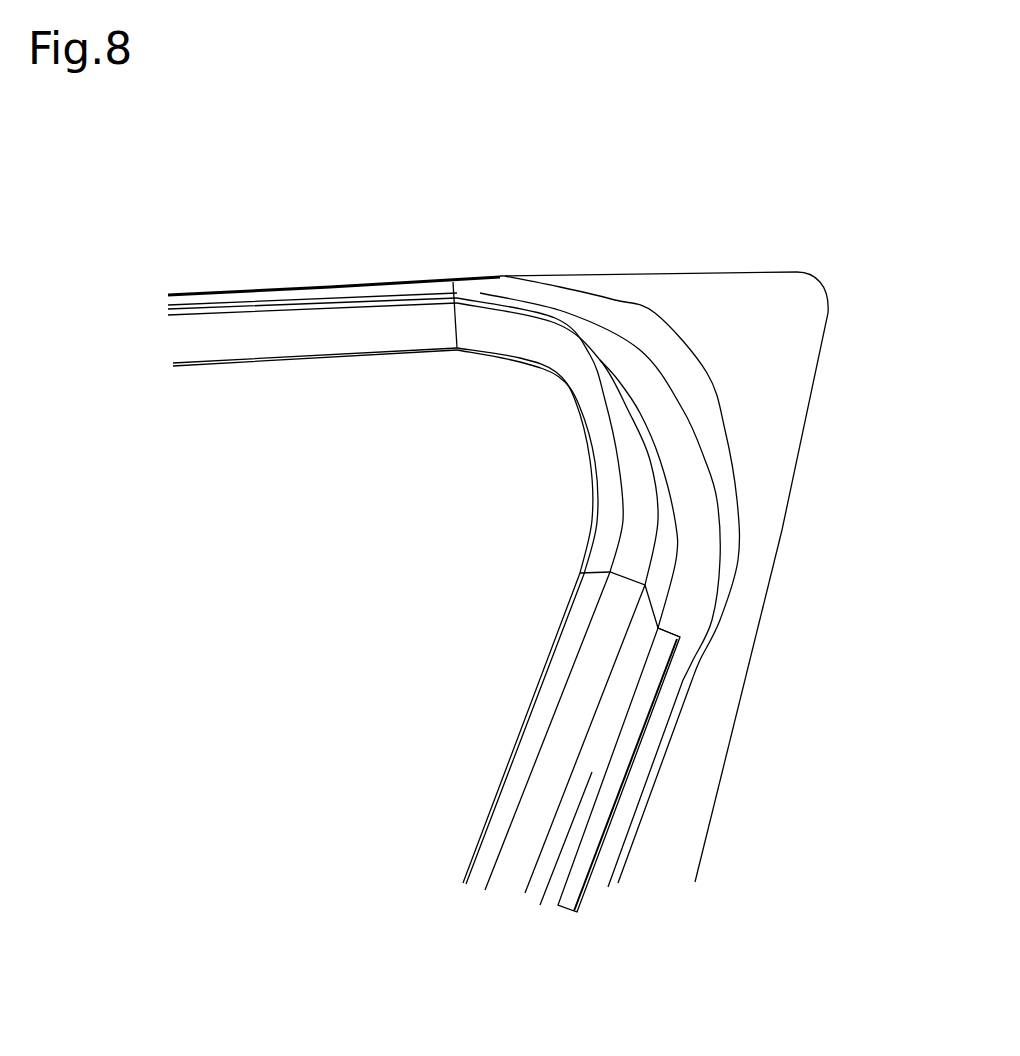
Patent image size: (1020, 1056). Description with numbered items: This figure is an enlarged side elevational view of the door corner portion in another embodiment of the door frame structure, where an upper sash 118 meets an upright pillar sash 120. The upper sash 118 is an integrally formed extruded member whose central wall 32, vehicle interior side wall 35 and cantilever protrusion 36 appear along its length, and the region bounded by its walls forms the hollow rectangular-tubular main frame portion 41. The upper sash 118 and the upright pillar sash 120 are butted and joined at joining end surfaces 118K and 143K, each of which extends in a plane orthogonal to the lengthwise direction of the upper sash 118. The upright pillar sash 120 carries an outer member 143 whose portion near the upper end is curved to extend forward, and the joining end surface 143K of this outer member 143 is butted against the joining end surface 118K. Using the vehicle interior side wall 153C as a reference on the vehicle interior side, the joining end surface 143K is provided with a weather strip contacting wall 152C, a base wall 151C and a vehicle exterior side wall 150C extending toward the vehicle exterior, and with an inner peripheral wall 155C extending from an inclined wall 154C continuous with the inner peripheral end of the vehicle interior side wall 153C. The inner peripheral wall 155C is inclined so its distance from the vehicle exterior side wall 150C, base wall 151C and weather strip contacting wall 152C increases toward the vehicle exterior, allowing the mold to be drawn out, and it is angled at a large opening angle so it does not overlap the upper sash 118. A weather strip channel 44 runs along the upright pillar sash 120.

The upper sash 118 is at (298, 283).
The central wall 32 is at (384, 288).
The cantilever protrusion 36 is at (238, 300).
The vehicle interior side wall 35 is at (387, 335).
The main frame portion 41 is at (263, 357).
The joining end surface 118K is at (460, 305).
The joining end surface 143K is at (457, 348).
The inner peripheral wall 155C is at (572, 414).
The inclined wall 154C is at (608, 468).
The vehicle interior side wall 153C is at (637, 512).
The weather strip contacting wall 152C is at (668, 548).
The base wall 151C is at (567, 305).
The vehicle exterior side wall 150C is at (612, 313).
The upright pillar sash 120 is at (760, 695).
The outer member 143 is at (703, 845).
The weather strip channel 44 is at (640, 776).